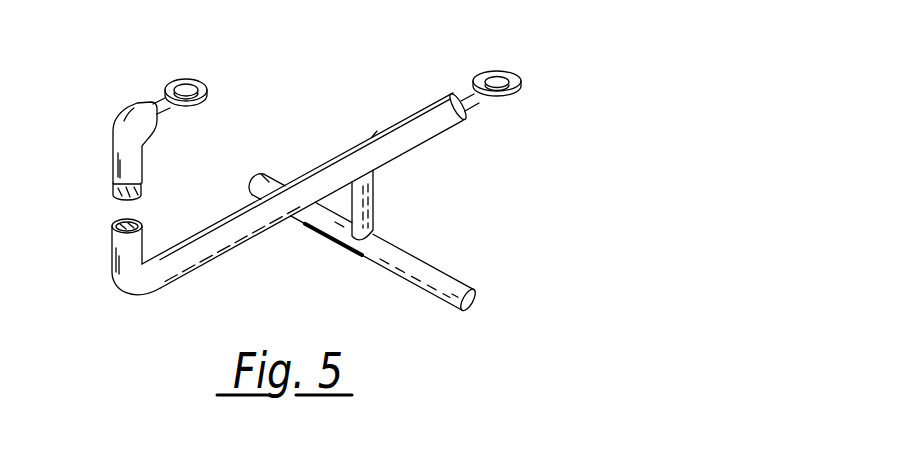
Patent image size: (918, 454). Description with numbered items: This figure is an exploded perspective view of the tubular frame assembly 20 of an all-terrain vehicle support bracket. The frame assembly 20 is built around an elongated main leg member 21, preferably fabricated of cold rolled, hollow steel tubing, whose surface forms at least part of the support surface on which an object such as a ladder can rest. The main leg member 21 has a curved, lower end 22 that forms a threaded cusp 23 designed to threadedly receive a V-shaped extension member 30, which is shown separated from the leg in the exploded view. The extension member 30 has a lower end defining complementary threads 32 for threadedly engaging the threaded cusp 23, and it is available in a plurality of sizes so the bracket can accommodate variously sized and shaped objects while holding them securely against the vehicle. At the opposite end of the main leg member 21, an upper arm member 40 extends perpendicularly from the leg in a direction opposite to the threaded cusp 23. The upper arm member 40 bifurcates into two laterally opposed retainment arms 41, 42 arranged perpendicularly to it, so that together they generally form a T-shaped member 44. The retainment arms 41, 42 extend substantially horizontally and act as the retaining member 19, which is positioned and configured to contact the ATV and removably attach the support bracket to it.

The retaining member 19 is at (436, 242).
The frame assembly 20 is at (384, 101).
The main leg member 21 is at (375, 135).
The lower end 22 is at (130, 282).
The threaded cusp 23 is at (140, 222).
The extension member 30 is at (133, 112).
The complementary threads 32 is at (115, 187).
The upper arm member 40 is at (377, 207).
The retainment arm 41 is at (270, 169).
The retainment arm 42 is at (463, 283).
The T-shaped member 44 is at (338, 250).